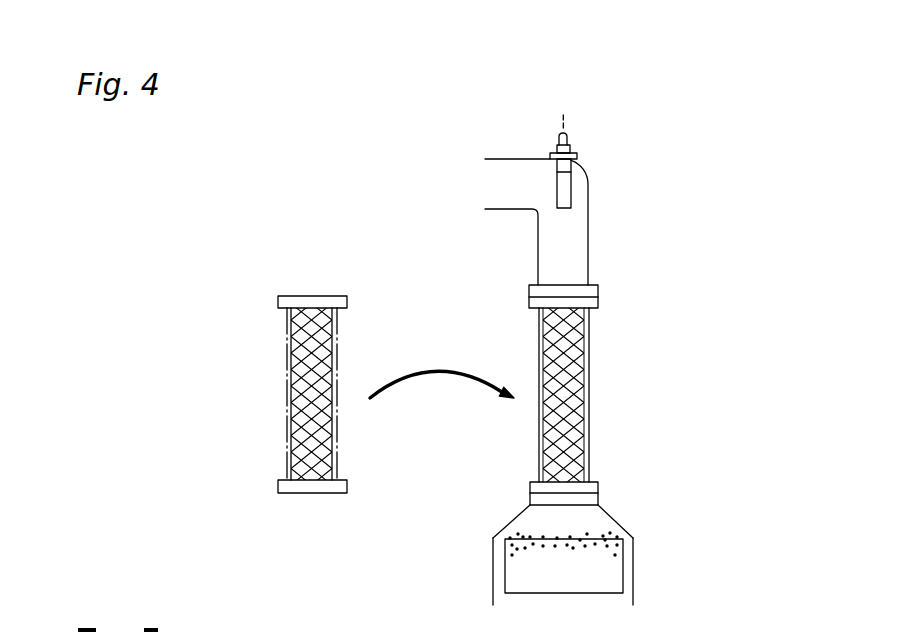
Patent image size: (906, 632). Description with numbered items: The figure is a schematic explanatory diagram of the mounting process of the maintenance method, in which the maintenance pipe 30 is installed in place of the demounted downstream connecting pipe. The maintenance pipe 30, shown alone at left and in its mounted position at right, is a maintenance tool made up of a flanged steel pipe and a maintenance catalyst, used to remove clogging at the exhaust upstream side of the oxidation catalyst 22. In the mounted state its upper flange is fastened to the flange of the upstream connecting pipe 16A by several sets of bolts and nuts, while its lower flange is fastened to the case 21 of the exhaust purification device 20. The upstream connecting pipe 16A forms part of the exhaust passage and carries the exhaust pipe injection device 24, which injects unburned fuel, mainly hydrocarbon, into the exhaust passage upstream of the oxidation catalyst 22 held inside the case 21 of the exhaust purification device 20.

The upstream connecting pipe 16A is at (503, 210).
The exhaust purification device 20 is at (620, 529).
The case 21 is at (613, 523).
The oxidation catalyst 22 is at (578, 577).
The exhaust pipe injection device 24 is at (571, 183).
The maintenance pipe 30 is at (335, 380).